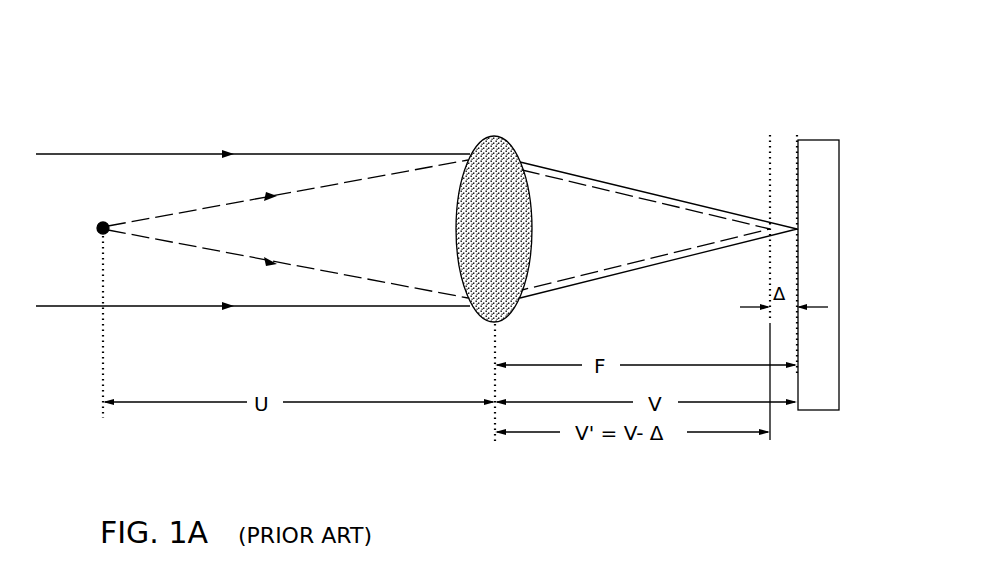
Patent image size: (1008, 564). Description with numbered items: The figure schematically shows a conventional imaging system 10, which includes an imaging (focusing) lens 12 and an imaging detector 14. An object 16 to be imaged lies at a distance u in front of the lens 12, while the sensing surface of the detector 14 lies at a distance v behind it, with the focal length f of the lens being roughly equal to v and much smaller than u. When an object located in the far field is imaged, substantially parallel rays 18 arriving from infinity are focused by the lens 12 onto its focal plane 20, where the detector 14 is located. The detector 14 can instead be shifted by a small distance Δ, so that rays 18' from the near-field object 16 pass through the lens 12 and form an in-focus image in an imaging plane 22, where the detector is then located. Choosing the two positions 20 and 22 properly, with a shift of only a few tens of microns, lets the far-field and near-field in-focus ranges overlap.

The conventional imaging system 10 is at (719, 81).
The imaging lens 12 is at (493, 137).
The imaging detector 14 is at (822, 246).
The object 16 is at (100, 231).
The parallel rays 18 is at (416, 209).
The rays from the object 18' is at (439, 229).
The focal plane 20 is at (797, 139).
The imaging plane 22 is at (770, 153).